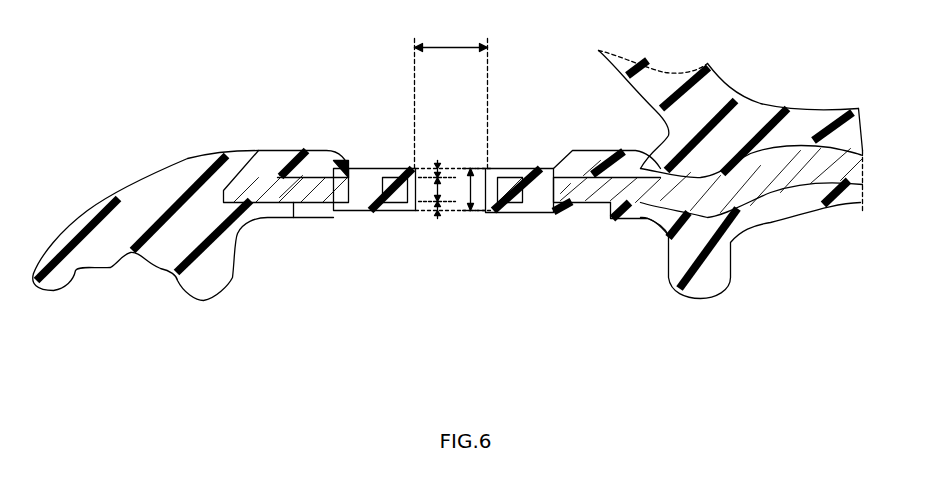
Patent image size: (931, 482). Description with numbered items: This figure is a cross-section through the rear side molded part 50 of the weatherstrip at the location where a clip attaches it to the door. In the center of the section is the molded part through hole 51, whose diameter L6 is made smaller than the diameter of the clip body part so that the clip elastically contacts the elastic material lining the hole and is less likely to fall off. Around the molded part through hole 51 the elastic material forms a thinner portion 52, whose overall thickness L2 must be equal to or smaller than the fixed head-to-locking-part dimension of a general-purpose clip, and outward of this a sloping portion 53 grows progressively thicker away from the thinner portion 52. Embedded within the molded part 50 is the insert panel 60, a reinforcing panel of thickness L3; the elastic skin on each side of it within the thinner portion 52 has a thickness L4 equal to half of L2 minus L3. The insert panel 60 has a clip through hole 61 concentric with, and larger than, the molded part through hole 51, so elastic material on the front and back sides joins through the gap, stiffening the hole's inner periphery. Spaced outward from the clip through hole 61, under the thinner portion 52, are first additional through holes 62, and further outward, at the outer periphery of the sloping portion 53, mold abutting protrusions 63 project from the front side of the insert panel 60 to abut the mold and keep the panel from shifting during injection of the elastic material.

The rear side molded part 50 is at (137, 197).
The molded part through hole 51 is at (478, 167).
The thinner portion 52 is at (385, 167).
The sloping portion 53 is at (352, 165).
The insert panel 60 is at (293, 163).
The clip through hole 61 is at (418, 177).
The first additional through hole 62 is at (353, 203).
The mold abutting protrusion 63 is at (273, 152).
The overall thickness of the thinner portion L2 is at (472, 210).
The thickness of the insert panel L3 is at (457, 198).
The thickness of the skin portion L4 is at (438, 166).
The diameter of the molded part through hole L6 is at (451, 95).